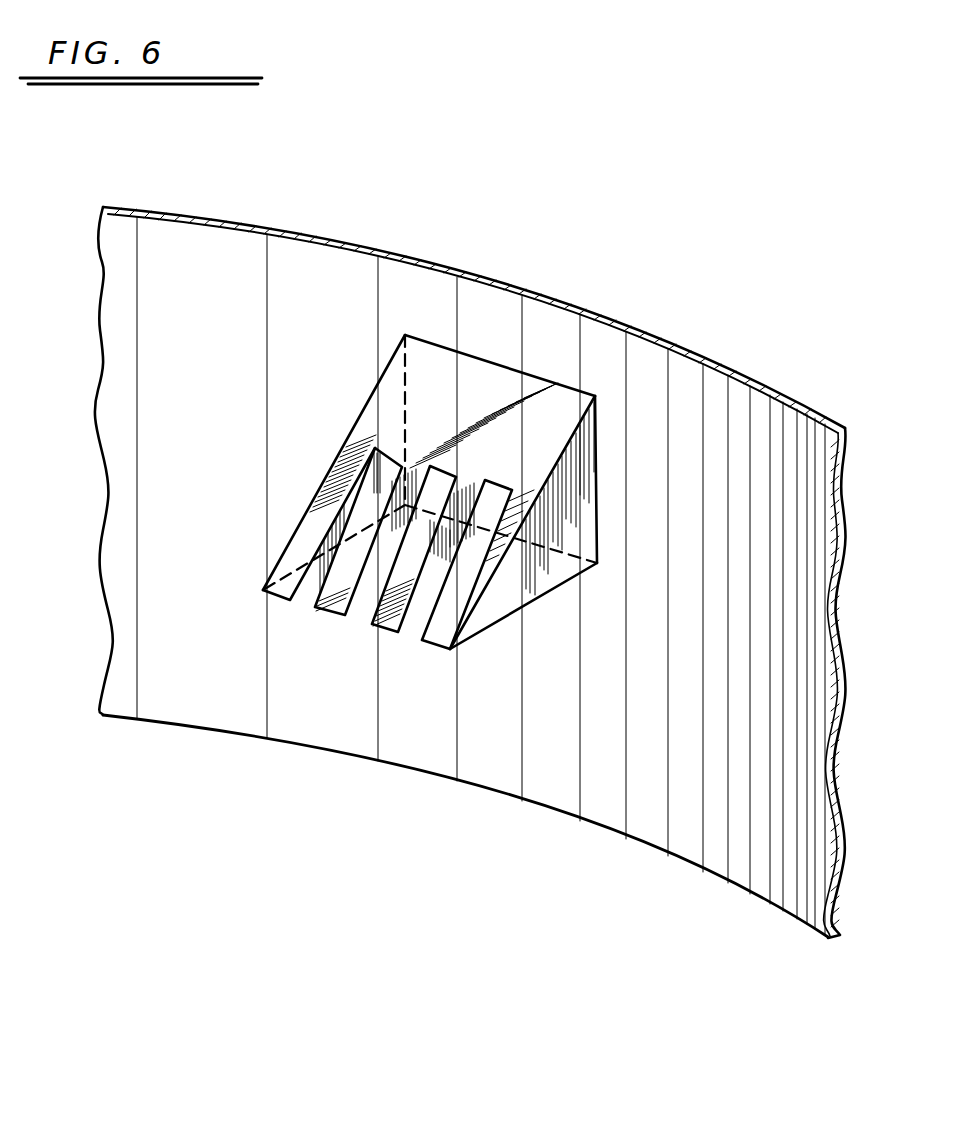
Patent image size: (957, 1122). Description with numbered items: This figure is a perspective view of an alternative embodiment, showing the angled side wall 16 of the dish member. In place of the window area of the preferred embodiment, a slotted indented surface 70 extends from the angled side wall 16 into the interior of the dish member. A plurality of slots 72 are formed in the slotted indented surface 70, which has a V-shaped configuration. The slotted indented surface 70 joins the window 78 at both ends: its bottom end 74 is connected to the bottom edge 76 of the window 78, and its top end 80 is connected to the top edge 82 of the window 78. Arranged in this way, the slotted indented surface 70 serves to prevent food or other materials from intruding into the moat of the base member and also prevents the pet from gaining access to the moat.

The angled side wall 16 is at (253, 248).
The slotted indented surface 70 is at (402, 427).
The slots 72 is at (442, 648).
The bottom end 74 is at (549, 593).
The bottom edge 76 is at (563, 556).
The window 78 is at (558, 481).
The top end 80 is at (432, 346).
The top edge 82 is at (517, 362).